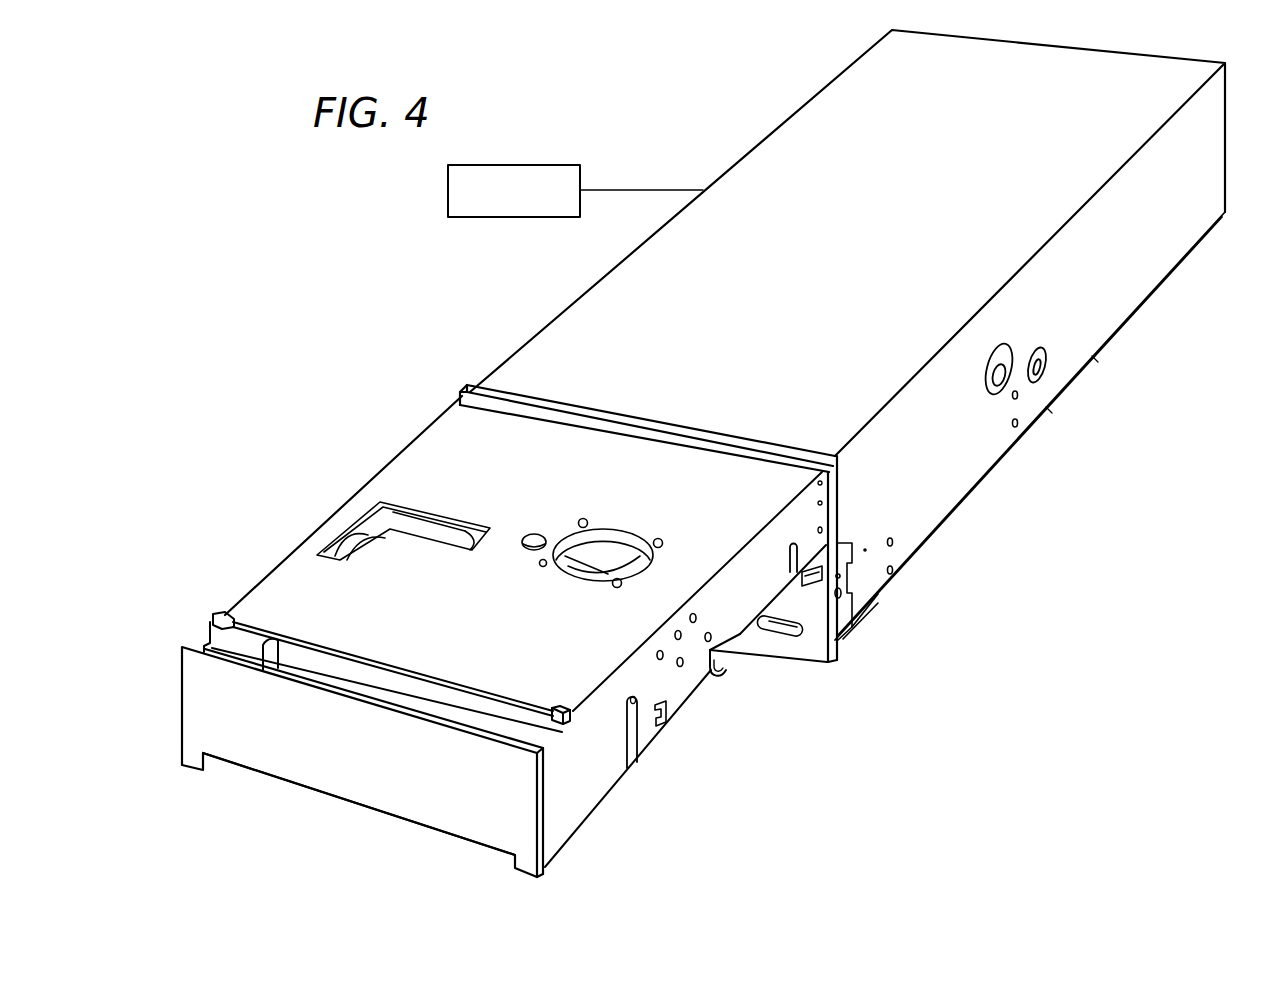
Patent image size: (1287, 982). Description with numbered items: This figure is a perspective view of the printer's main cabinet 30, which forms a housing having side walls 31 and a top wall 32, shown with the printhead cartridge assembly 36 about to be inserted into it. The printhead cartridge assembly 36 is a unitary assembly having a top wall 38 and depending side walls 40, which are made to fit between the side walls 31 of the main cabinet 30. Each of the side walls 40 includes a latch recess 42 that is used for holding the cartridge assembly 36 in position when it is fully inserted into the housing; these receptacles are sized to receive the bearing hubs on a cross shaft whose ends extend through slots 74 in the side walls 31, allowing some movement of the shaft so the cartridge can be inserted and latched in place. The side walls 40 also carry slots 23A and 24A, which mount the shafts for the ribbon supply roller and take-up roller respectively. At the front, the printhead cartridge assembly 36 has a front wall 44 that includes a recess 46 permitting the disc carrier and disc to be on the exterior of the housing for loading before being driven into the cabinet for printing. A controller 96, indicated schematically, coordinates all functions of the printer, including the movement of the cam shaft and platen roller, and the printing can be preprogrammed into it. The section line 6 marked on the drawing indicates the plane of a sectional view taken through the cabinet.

The top wall 32 is at (1137, 123).
The side walls 31 is at (948, 489).
The main cabinet 30 is at (1123, 327).
The slots 74 is at (1008, 343).
The printhead cartridge assembly 36 is at (402, 450).
The top wall 38 is at (508, 448).
The side walls 40 is at (588, 775).
The slot 23A is at (635, 733).
The slot 24A is at (788, 567).
The latch recess 42 is at (718, 657).
The front wall 44 is at (287, 755).
The recess 46 is at (503, 852).
The controller 96 is at (467, 217).
The section line 6- 6 is at (1037, 82).